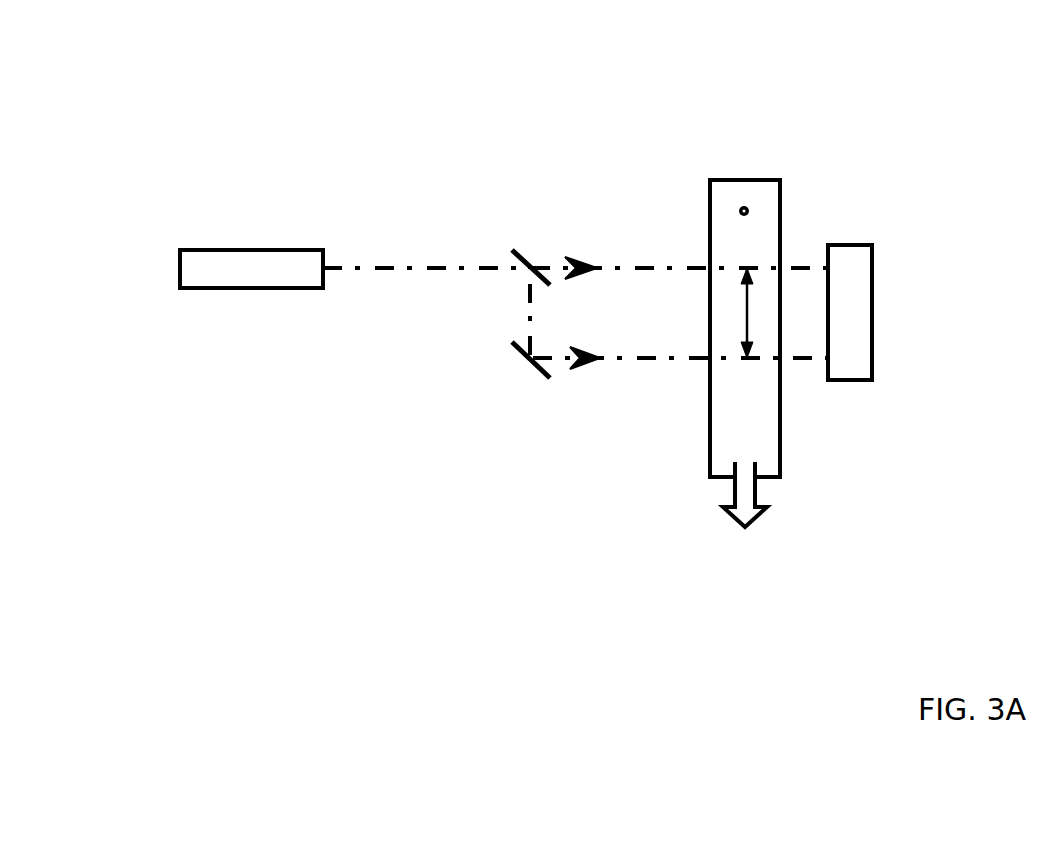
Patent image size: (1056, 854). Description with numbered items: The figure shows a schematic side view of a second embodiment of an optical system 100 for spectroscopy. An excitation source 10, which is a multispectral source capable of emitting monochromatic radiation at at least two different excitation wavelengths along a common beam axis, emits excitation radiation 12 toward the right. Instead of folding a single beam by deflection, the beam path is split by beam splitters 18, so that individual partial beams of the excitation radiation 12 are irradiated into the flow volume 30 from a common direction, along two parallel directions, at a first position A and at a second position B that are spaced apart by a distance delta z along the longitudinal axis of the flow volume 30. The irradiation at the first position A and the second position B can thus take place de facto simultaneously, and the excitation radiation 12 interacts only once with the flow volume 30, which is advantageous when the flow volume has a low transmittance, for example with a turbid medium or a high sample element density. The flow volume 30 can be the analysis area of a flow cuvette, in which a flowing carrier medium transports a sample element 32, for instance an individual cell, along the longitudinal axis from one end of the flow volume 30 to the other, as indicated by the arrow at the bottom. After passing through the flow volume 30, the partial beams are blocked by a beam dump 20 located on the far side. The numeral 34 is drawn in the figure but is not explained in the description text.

The optical system 100 is at (511, 131).
The excitation source 10 is at (225, 245).
The excitation radiation 12 is at (435, 260).
The beam splitters 18 is at (525, 276).
The beam dump 20 is at (867, 235).
The flow volume 30 is at (700, 173).
The sample element 32 is at (731, 206).
The displacement distance Δz 34 is at (731, 248).
The first position A is at (750, 260).
The second position B is at (748, 367).